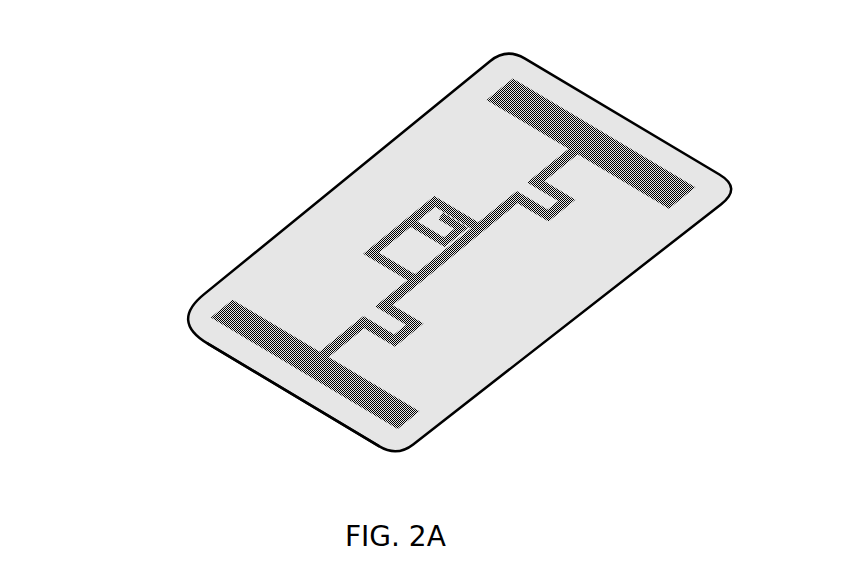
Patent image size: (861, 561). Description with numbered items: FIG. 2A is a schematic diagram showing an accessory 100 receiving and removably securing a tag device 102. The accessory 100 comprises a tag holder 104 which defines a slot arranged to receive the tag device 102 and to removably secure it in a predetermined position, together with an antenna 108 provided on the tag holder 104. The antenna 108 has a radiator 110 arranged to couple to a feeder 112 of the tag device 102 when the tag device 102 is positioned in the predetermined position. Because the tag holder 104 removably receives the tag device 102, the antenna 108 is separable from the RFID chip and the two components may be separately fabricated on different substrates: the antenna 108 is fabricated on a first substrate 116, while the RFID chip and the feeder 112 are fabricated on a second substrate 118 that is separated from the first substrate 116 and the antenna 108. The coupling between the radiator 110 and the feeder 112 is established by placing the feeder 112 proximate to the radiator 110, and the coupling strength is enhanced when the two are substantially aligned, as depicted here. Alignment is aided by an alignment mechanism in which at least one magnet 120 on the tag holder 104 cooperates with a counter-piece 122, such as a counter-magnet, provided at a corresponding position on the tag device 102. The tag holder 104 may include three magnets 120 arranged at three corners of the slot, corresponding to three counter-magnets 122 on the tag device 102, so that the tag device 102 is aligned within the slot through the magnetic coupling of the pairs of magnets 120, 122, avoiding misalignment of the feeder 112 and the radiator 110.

The accessory 100 is at (405, 269).
The tag device 102 is at (508, 384).
The tag holder 104 is at (442, 130).
The antenna 108 is at (379, 302).
The radiator 110 is at (500, 220).
The feeder 112 is at (484, 233).
The first substrate 116 is at (270, 253).
The second substrate 118 is at (275, 383).
The magnet 120 is at (258, 333).
The counter-piece 122 is at (253, 350).